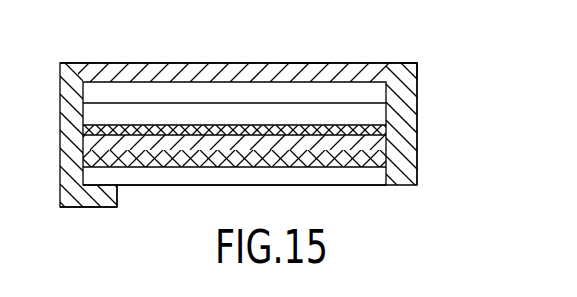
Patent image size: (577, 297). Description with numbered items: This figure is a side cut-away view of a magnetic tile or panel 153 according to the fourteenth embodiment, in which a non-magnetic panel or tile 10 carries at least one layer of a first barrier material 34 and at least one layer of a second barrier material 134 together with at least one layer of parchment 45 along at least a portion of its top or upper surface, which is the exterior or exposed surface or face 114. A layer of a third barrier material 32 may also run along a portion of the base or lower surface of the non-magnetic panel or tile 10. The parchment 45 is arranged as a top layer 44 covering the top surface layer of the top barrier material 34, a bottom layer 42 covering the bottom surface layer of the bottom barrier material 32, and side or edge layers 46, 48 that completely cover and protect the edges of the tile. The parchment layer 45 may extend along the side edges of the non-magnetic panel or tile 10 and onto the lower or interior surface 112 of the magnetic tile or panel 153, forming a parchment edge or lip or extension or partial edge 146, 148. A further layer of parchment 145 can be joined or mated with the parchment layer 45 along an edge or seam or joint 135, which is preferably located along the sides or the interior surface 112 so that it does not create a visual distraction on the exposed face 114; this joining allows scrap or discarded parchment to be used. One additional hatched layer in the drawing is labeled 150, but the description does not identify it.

The non-magnetic panel or tile 10 is at (202, 98).
The third barrier material 32 is at (187, 177).
The first barrier material 34 is at (180, 91).
The bottom layer of parchment material 42 is at (98, 202).
The top layer of parchment material 44 is at (308, 115).
The parchment 45 is at (373, 60).
The side or edge layer of parchment material 46 is at (408, 88).
The side or edge layer of parchment material 48 is at (72, 162).
The lower or interior surface 112 is at (344, 187).
The exterior or exposed surface or face 114 is at (218, 62).
The second barrier material 134 is at (402, 31).
The edge or seam or joint 135 is at (73, 83).
The layer of parchment 145 is at (90, 197).
The parchment edge or lip or extension or partial edge 146 is at (402, 173).
The parchment edge or lip or extension or partial edge 148 is at (113, 194).
The adhesive layer 150 is at (273, 140).
The magnetic tile or panel 153 is at (300, 70).